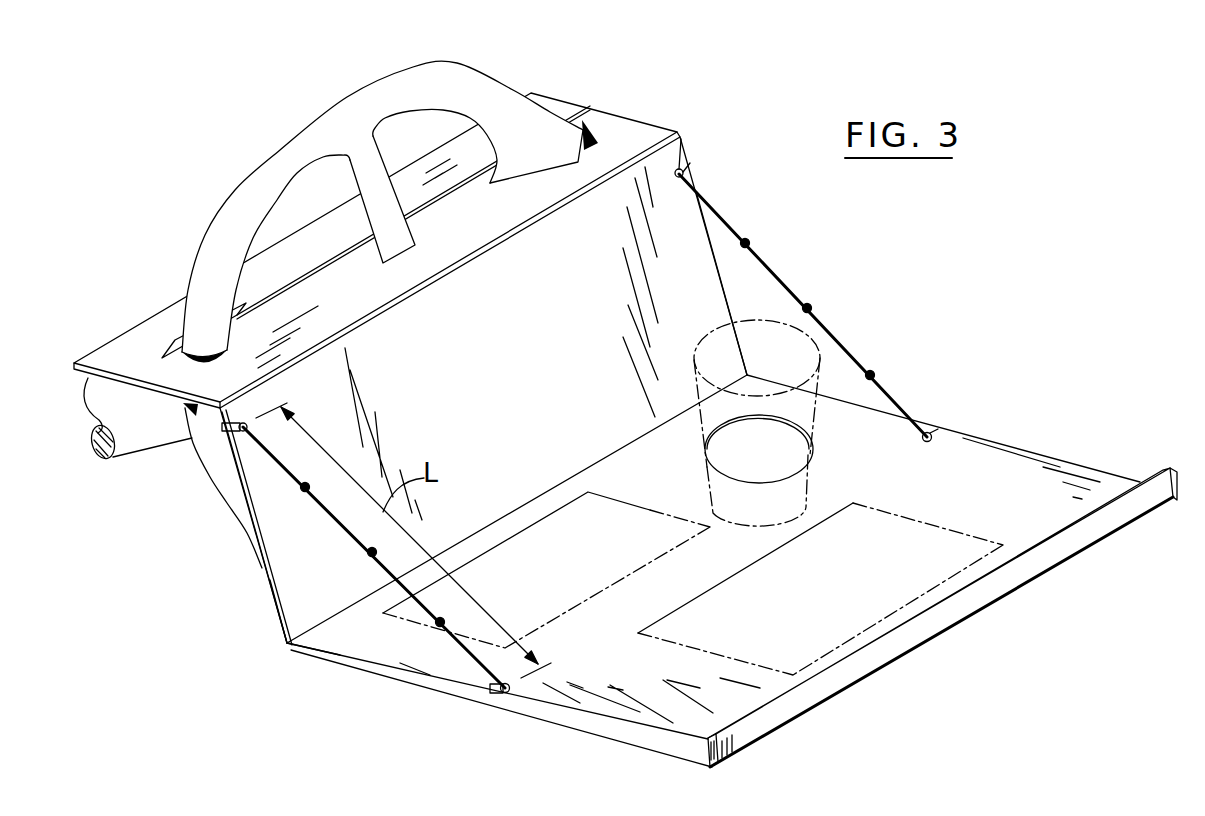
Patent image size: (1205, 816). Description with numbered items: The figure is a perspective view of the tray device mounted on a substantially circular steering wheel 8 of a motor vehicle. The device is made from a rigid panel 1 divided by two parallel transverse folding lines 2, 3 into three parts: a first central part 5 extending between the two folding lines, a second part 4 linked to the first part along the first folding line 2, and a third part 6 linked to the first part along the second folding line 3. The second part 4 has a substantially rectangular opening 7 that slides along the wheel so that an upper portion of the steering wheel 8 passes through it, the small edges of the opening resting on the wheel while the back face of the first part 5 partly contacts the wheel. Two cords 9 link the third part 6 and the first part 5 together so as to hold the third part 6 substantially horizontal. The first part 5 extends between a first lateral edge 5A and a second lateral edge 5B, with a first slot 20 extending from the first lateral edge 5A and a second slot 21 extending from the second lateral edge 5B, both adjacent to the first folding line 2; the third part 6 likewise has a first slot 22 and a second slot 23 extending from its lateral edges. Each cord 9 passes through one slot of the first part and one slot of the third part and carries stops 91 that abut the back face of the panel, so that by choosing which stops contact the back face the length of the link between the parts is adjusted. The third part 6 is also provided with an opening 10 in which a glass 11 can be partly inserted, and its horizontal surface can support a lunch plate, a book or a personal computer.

The rigid panel 1 is at (1004, 429).
The first folding line 2 is at (378, 300).
The second folding line 3 is at (578, 473).
The second part 4 is at (640, 130).
The first central part 5 is at (273, 557).
The first lateral edge 5A is at (272, 603).
The second lateral edge 5B is at (727, 277).
The third part 6 is at (600, 712).
The rectangular opening 7 is at (484, 183).
The steering wheel 8 is at (275, 158).
The cord 9 is at (787, 293).
The opening 10 is at (727, 463).
The glass 11 is at (825, 423).
The first slot 20 is at (223, 429).
The second slot 21 is at (692, 162).
The first slot 22 is at (500, 698).
The second slot 23 is at (935, 432).
The stop 91 is at (870, 373).